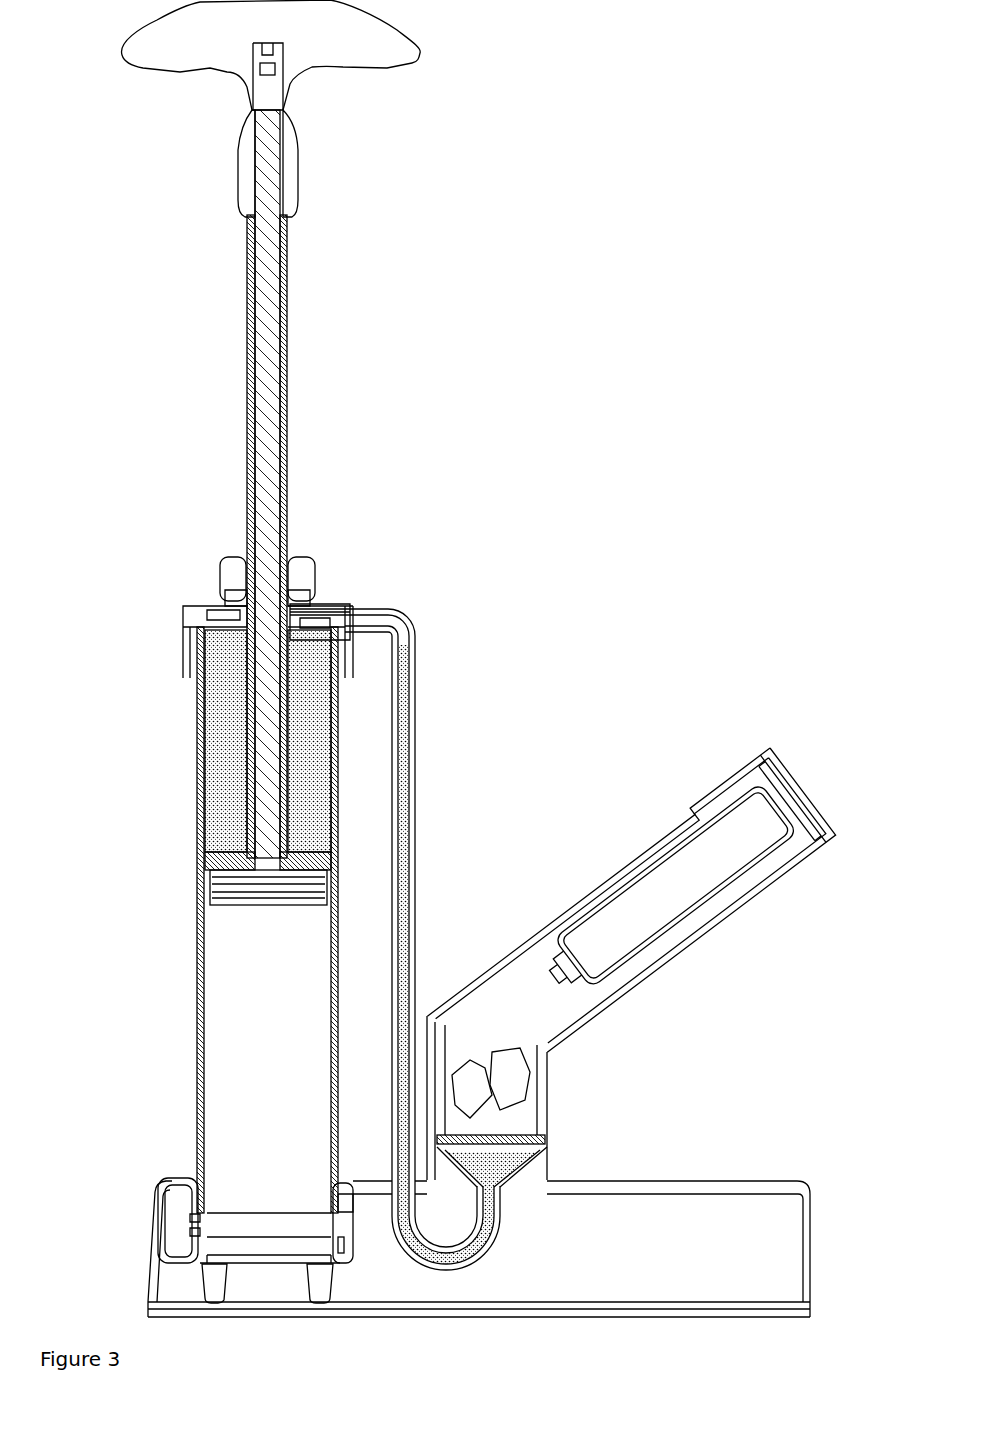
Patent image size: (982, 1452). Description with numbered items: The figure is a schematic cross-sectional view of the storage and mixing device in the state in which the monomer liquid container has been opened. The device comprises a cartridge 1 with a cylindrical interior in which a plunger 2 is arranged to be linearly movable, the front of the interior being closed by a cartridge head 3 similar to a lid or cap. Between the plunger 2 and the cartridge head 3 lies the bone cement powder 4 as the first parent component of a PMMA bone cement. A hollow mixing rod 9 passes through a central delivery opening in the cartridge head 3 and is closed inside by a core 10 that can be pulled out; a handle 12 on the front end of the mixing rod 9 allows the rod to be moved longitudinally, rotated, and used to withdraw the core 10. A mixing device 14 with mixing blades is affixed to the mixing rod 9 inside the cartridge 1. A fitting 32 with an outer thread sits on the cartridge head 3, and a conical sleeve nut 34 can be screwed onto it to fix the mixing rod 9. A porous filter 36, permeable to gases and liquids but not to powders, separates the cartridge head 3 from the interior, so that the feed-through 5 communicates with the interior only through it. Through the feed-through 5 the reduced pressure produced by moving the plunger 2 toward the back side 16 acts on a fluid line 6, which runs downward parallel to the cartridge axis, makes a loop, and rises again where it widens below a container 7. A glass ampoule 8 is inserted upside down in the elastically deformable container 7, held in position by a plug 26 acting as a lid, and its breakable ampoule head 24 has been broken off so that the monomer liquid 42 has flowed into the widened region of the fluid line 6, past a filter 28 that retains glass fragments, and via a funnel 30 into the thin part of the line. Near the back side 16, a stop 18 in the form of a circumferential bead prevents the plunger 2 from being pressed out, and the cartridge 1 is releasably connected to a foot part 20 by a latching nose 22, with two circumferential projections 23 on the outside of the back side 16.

The cartridge 1 is at (205, 750).
The plunger 2 is at (232, 893).
The cartridge head 3 is at (227, 607).
The bone cement powder 4 is at (227, 697).
The feed-through 5 is at (337, 612).
The fluid line 6 is at (405, 840).
The container 7 is at (623, 862).
The glass ampoule 8 is at (693, 842).
The mixing rod 9 is at (248, 455).
The core 10 is at (270, 355).
The handle 12 is at (310, 38).
The mixing device 14 is at (228, 855).
The back side 16 is at (253, 1247).
The stop 18 is at (225, 1230).
The foot part 20 is at (665, 1310).
The latching nose 22 is at (350, 1202).
The circumferential projections 23 is at (195, 1230).
The ampoule head 24 is at (508, 1090).
The plug 26 is at (788, 775).
The filter 28 is at (470, 1138).
The funnel 30 is at (455, 1160).
The fitting 32 is at (247, 585).
The sleeve nut 34 is at (233, 565).
The porous filter 36 is at (313, 623).
The monomer liquid 42 is at (483, 1250).